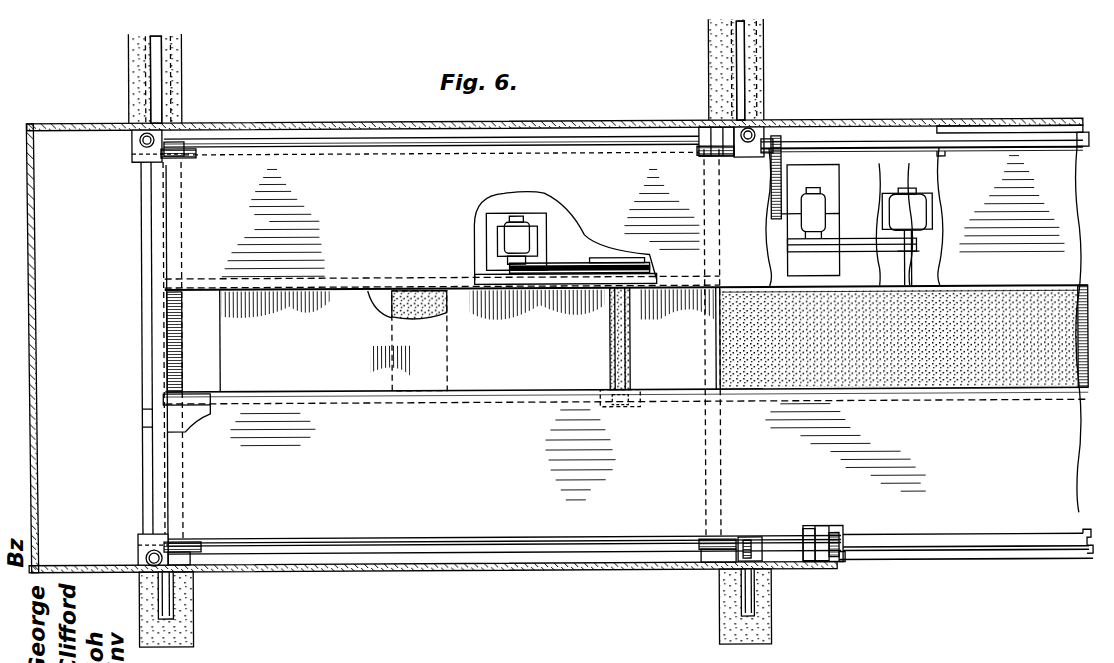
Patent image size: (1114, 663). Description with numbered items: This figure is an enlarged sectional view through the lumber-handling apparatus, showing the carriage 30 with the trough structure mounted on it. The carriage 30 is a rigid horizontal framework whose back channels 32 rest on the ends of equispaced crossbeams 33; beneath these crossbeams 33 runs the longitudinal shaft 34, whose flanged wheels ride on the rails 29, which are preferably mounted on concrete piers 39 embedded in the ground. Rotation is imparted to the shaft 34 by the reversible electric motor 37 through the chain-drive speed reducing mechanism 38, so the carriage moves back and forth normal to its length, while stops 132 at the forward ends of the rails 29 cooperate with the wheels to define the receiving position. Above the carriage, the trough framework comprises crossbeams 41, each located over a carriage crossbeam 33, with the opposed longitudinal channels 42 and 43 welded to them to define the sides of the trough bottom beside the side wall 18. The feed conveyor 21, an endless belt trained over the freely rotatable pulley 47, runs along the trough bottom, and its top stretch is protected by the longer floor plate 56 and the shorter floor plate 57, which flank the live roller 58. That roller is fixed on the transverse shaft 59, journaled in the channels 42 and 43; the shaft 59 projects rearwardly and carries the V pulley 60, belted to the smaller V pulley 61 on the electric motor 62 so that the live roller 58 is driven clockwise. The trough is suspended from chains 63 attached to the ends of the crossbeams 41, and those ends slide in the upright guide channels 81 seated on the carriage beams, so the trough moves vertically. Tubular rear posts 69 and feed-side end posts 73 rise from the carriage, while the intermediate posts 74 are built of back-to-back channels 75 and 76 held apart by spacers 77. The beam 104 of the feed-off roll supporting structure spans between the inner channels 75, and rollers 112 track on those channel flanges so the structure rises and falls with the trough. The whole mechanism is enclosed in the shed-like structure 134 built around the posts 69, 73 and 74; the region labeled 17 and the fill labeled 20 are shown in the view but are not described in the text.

The upper panel 17 is at (414, 215).
The side wall 18 is at (432, 485).
The fill material 20 is at (1027, 372).
The feed or receiving conveyor 21 is at (952, 378).
The rails 29 is at (160, 101).
The carriage 30 is at (650, 88).
The back channels 32 is at (1080, 135).
The crossbeams 33 is at (150, 250).
The shaft 34 is at (852, 140).
The reversible electric motor 37 is at (890, 212).
The chain-drive speed reducing mechanism 38 is at (830, 194).
The concrete piers 39 is at (182, 76).
The crossbeams 41 is at (180, 338).
The longitudinal channel 42 is at (195, 396).
The longitudinal channel 43 is at (574, 282).
The freely rotatable pulley 47 is at (410, 394).
The floor plate 56 is at (314, 360).
The floor plate 57 is at (686, 356).
The live roller 58 is at (612, 350).
The transverse shaft 59 is at (622, 407).
The V pulley 60 is at (602, 260).
The V pulley 61 is at (495, 270).
The electric motor 62 is at (512, 222).
The chains 63 is at (185, 160).
The rear posts 69 is at (141, 143).
The end posts 73 is at (145, 552).
The intermediate posts 74 is at (830, 574).
The channel 75 is at (845, 545).
The channel 76 is at (804, 542).
The spacers 77 is at (820, 535).
The upright channels 81 is at (182, 148).
The beam 104 is at (938, 563).
The rollers 112 is at (840, 556).
The stops 132 is at (170, 615).
The shed-like structure 134 is at (975, 95).